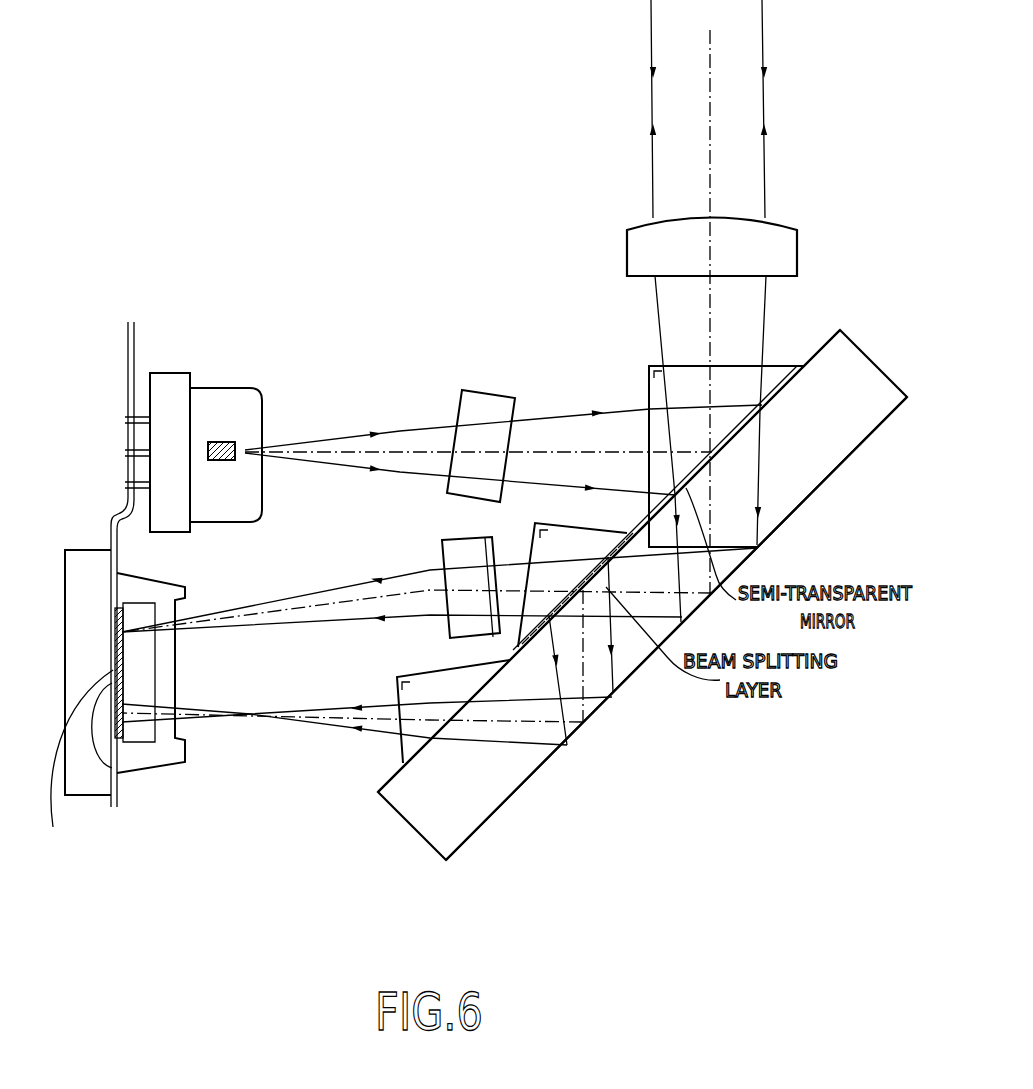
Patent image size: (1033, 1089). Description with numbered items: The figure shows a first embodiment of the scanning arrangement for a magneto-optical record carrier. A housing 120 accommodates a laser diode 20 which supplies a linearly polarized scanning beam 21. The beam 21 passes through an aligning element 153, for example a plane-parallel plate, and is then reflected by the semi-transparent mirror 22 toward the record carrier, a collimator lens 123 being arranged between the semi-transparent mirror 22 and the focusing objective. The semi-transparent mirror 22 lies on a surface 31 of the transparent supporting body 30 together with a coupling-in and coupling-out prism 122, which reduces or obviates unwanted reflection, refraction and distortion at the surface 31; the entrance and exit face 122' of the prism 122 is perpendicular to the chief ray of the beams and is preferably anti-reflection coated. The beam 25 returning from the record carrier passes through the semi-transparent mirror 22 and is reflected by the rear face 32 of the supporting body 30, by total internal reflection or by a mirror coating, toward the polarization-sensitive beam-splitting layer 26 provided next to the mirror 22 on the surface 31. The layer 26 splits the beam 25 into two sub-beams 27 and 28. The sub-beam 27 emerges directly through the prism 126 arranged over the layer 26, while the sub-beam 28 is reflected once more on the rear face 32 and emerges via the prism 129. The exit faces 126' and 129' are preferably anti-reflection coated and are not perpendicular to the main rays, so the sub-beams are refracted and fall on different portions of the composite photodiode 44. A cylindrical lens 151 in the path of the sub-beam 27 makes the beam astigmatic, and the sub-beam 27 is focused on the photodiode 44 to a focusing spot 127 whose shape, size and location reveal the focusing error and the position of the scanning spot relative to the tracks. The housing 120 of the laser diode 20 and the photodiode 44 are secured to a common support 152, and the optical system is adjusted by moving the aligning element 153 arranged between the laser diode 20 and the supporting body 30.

The laser diode 20 is at (222, 442).
The scanning beam 21 is at (767, 135).
The semi-transparent mirror 22 is at (780, 365).
The beam from the record carrier 25 is at (763, 70).
The beam-splitting layer 26 is at (612, 538).
The sub-beam 27 is at (273, 595).
The sub-beam 28 is at (327, 722).
The transparent supporting body 30 is at (865, 377).
The surface of the supporting body 31 is at (837, 327).
The rear face 32 is at (855, 452).
The composite photodiode 44 is at (114, 769).
The housing 120 is at (222, 503).
The coupling-in and coupling-out prism 122 is at (691, 456).
The entrance and exit face of the prism 122' is at (585, 444).
The collimator lens 123 is at (634, 243).
The prism 126 is at (571, 568).
The exit face of the prism 126' is at (499, 521).
The focusing spot 127 is at (122, 632).
The prism 129 is at (425, 696).
The exit face of the prism 129' is at (374, 687).
The cylindrical lens 151 is at (430, 558).
The common support 152 is at (108, 530).
The aligning element 153 is at (470, 395).